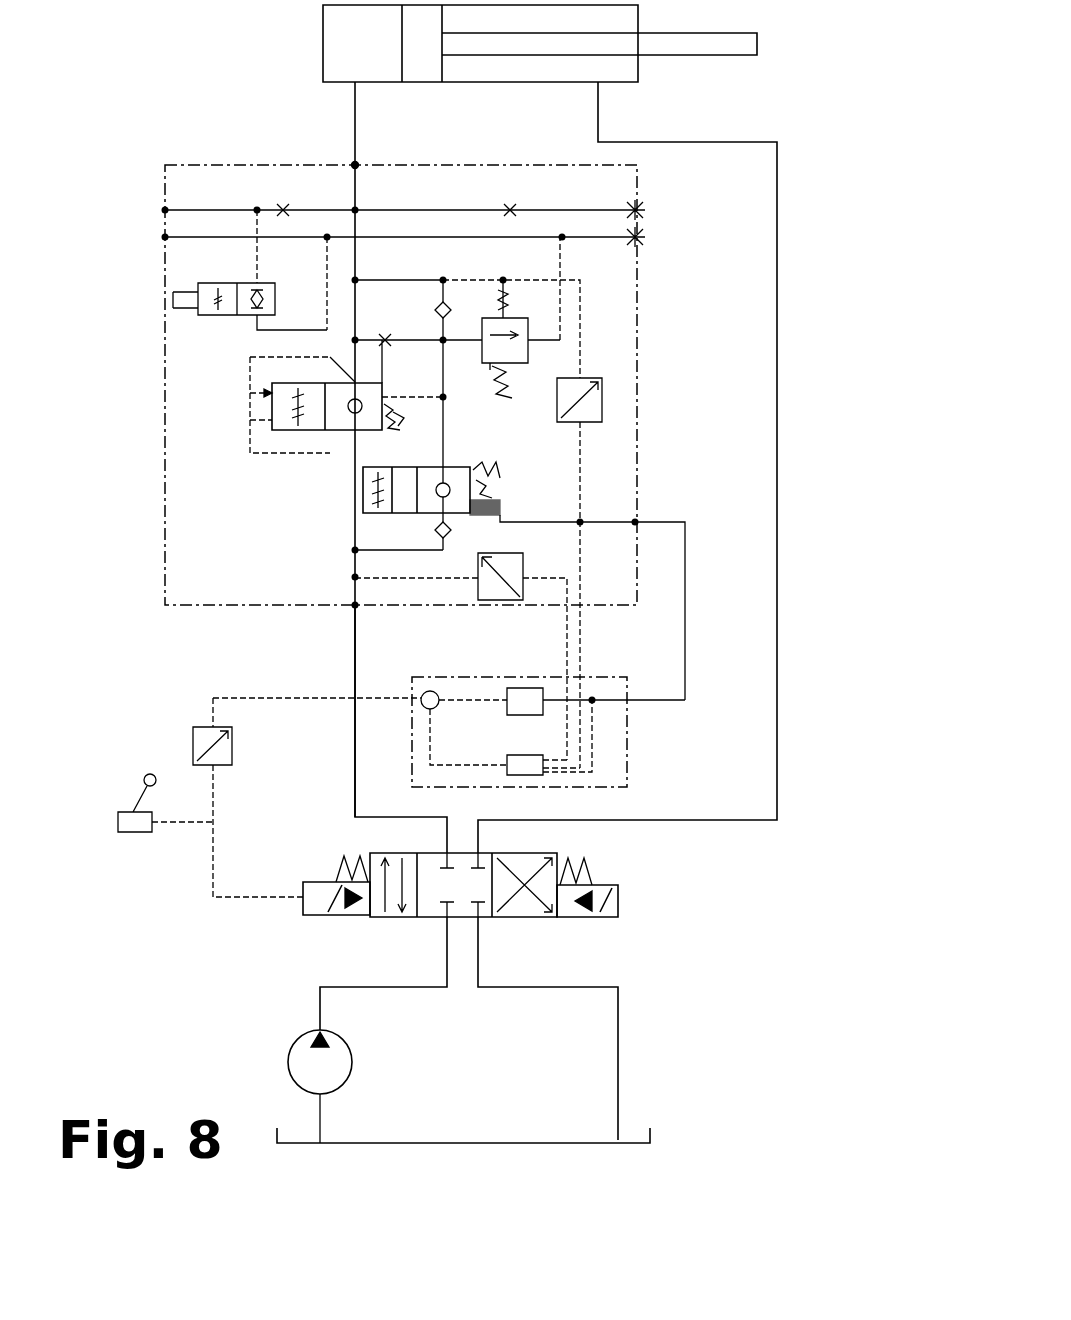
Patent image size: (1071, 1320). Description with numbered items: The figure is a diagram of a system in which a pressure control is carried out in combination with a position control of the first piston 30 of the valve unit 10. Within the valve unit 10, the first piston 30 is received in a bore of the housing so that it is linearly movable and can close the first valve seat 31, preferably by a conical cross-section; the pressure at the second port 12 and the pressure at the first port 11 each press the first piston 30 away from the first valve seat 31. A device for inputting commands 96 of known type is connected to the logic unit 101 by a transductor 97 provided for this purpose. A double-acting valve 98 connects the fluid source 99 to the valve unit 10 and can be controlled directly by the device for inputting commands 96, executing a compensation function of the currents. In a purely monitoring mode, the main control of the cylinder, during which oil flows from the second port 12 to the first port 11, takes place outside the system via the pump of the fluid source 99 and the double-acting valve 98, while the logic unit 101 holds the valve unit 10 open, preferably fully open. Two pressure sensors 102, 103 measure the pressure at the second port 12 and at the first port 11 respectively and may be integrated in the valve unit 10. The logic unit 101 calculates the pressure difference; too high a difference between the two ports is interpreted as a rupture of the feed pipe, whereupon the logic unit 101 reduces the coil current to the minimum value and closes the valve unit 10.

The valve unit 10 is at (165, 523).
The first port 11 is at (352, 610).
The second port 12 is at (355, 165).
The first piston 30 is at (343, 422).
The first valve seat 31 is at (250, 420).
The device for inputting commands 96 is at (131, 826).
The transductor 97 is at (193, 746).
The double-acting valve 98 is at (395, 902).
The fluid source 99 is at (308, 1067).
The logic unit 101 is at (627, 740).
The pressure sensor 102 is at (602, 395).
The pressure sensor 103 is at (523, 580).